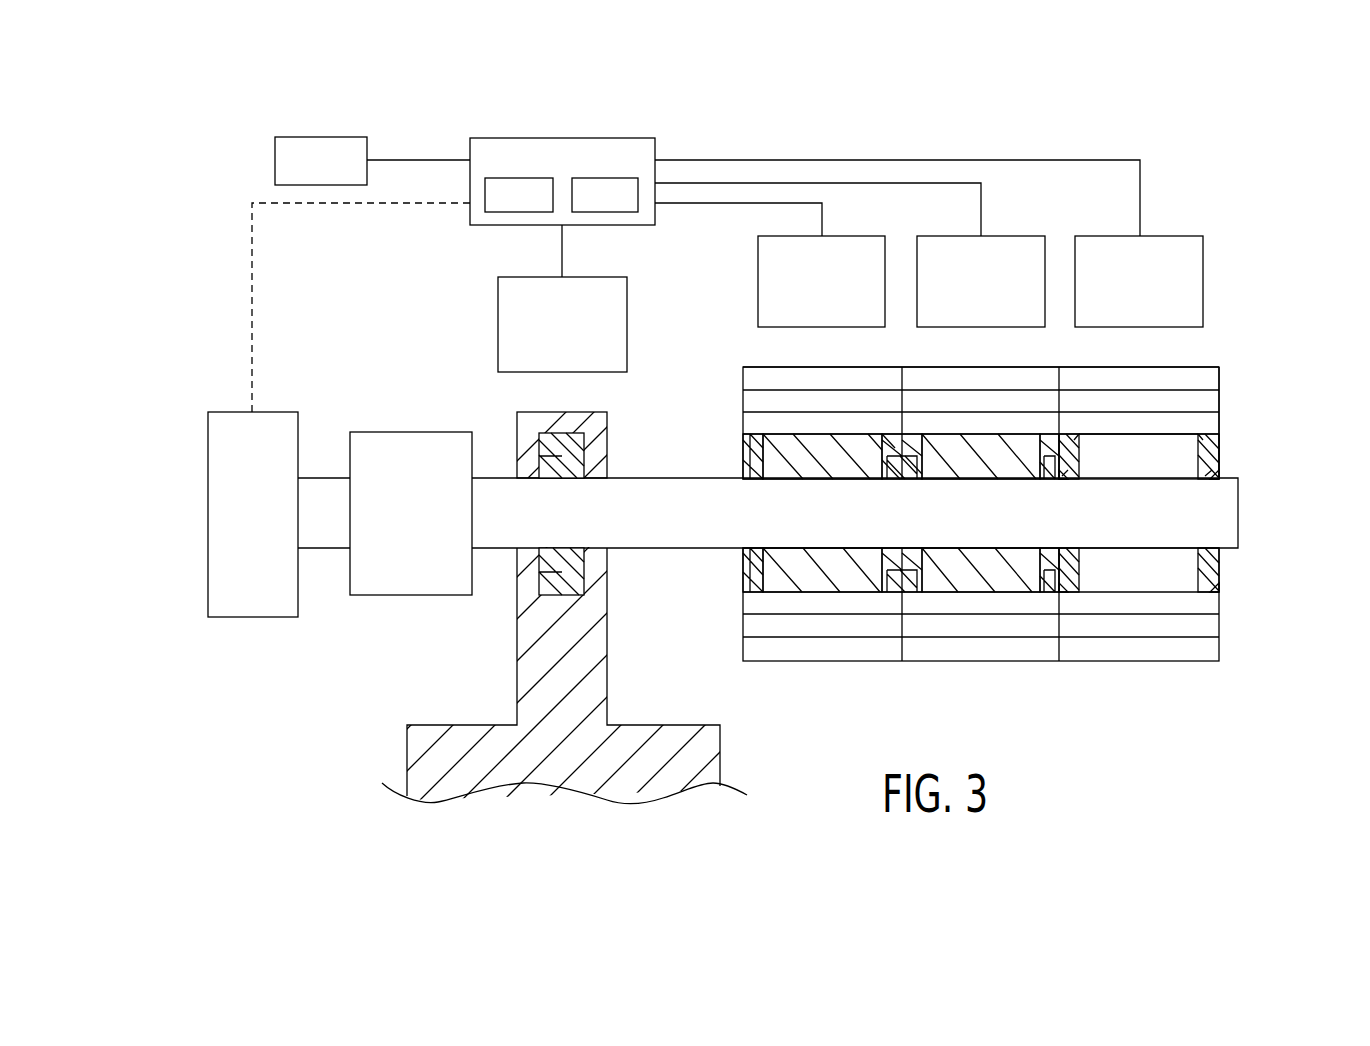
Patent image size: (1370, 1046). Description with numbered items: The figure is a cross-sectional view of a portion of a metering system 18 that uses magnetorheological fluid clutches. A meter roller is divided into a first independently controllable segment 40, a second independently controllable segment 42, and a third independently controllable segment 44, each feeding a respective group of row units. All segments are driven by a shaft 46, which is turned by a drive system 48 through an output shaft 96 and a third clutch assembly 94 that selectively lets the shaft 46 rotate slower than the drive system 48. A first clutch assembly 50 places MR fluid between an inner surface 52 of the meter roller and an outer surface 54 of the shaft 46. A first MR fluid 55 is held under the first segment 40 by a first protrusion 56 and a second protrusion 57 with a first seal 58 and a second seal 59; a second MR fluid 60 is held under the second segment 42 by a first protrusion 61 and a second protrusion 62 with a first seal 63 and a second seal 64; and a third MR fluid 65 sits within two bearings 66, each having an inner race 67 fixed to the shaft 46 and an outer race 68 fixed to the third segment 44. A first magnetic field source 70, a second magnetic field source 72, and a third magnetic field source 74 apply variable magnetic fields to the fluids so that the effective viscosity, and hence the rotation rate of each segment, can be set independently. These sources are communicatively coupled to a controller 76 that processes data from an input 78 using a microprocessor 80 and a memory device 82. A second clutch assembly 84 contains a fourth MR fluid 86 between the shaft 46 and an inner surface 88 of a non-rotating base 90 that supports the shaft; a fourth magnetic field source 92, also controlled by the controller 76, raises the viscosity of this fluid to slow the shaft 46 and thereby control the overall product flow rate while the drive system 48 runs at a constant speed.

The metering system 18 is at (1249, 293).
The first independently controllable segment 40 is at (743, 394).
The second independently controllable segment 42 is at (978, 367).
The third independently controllable segment 44 is at (1219, 403).
The shaft 46 is at (1238, 512).
The drive system 48 is at (232, 412).
The first clutch assembly 50 is at (727, 566).
The inner surface 52 is at (862, 588).
The outer surface 54 is at (960, 555).
The first MR fluid 55 is at (816, 478).
The first protrusion 56 is at (758, 434).
The second protrusion 57 is at (891, 440).
The first seal 58 is at (746, 455).
The second seal 59 is at (885, 480).
The second MR fluid 60 is at (975, 470).
The first protrusion 61 is at (912, 440).
The second protrusion 62 is at (1048, 440).
The first seal 63 is at (917, 480).
The second seal 64 is at (1043, 480).
The third MR fluid 65 is at (1079, 455).
The bearings 66 is at (1081, 435).
The inner race 67 is at (1070, 480).
The outer race 68 is at (1079, 437).
The first magnetic field source 70 is at (758, 282).
The second magnetic field source 72 is at (948, 236).
The third magnetic field source 74 is at (1110, 236).
The controller 76 is at (560, 138).
The input 78 is at (322, 137).
The microprocessor 80 is at (607, 212).
The memory device 82 is at (517, 212).
The second clutch assembly 84 is at (505, 422).
The fourth MR fluid 86 is at (565, 458).
The inner surface 88 is at (580, 595).
The base 90 is at (538, 648).
The fourth magnetic field source 92 is at (498, 319).
The third clutch assembly 94 is at (408, 595).
The output shaft 96 is at (325, 478).